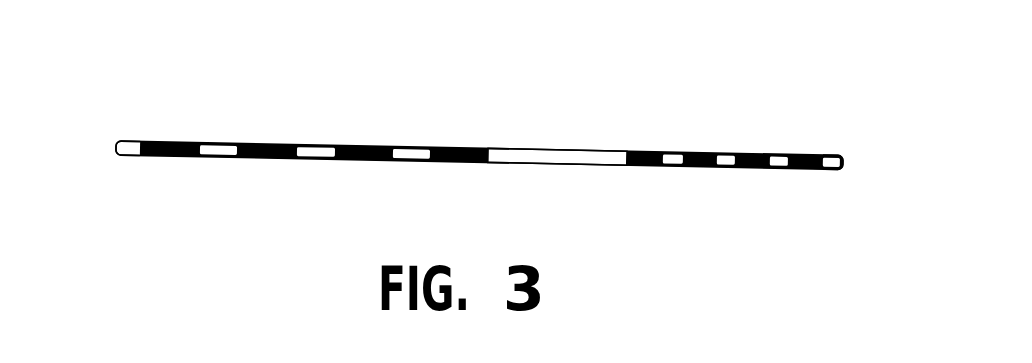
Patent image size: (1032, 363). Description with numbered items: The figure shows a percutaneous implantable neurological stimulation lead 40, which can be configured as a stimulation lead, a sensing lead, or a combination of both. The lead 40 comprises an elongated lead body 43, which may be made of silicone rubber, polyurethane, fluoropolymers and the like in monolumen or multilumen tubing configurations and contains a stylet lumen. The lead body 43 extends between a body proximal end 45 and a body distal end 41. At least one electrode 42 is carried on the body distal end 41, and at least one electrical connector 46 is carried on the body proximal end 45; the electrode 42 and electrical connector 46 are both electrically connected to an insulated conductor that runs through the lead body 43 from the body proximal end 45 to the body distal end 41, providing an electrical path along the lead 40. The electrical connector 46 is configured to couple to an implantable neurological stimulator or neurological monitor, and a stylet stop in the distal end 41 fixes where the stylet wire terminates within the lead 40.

The neurological stimulation lead 40 is at (540, 108).
The body distal end 41 is at (90, 217).
The electrode 42 is at (447, 148).
The lead body 43 is at (570, 164).
The body proximal end 45 is at (845, 212).
The electrical connector 46 is at (645, 152).